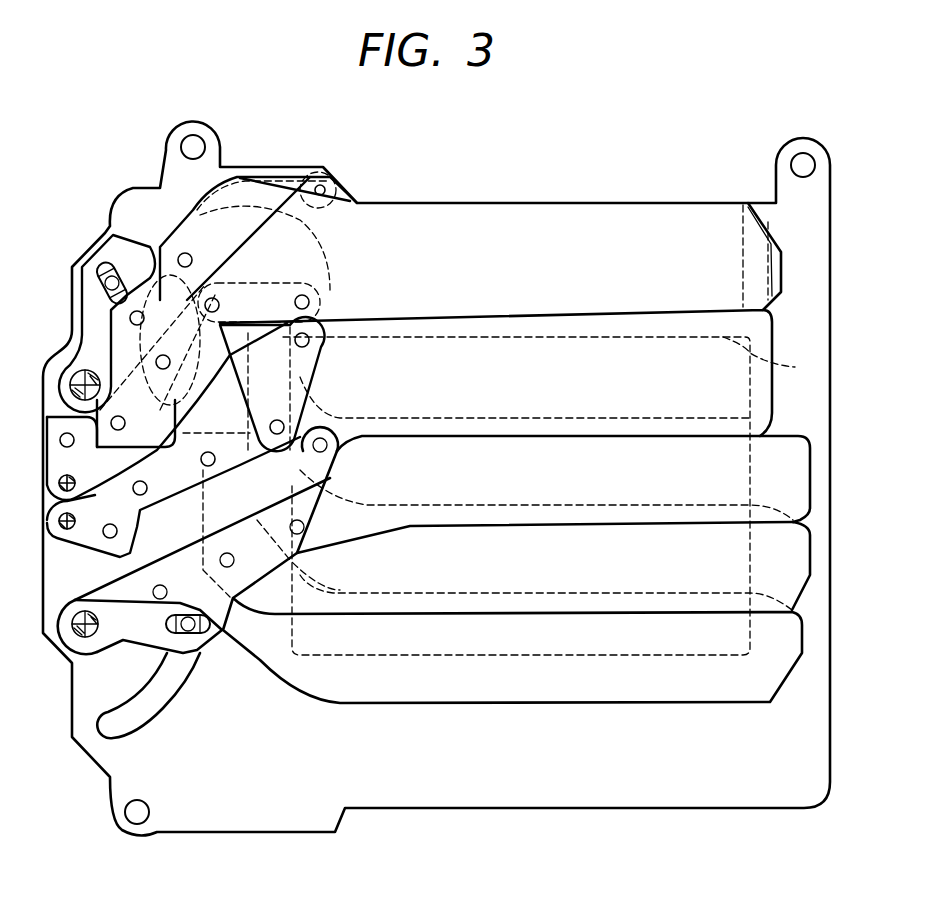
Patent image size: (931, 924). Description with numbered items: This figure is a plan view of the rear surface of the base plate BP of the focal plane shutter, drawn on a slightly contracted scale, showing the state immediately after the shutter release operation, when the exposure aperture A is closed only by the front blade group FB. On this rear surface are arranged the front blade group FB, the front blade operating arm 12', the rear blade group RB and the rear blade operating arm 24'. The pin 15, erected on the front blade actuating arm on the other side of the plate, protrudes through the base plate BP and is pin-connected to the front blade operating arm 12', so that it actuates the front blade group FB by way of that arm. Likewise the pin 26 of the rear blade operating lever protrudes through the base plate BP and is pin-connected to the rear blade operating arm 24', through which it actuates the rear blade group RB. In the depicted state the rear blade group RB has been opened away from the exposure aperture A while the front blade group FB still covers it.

The base plate BP is at (227, 820).
The rear blade group RB is at (843, 201).
The front blade group FB is at (843, 710).
The exposure aperture A is at (767, 366).
The rear blade operating arm 24' is at (107, 292).
The pin 26 is at (108, 282).
The front blade operating arm 12' is at (140, 669).
The pin 15 is at (190, 628).